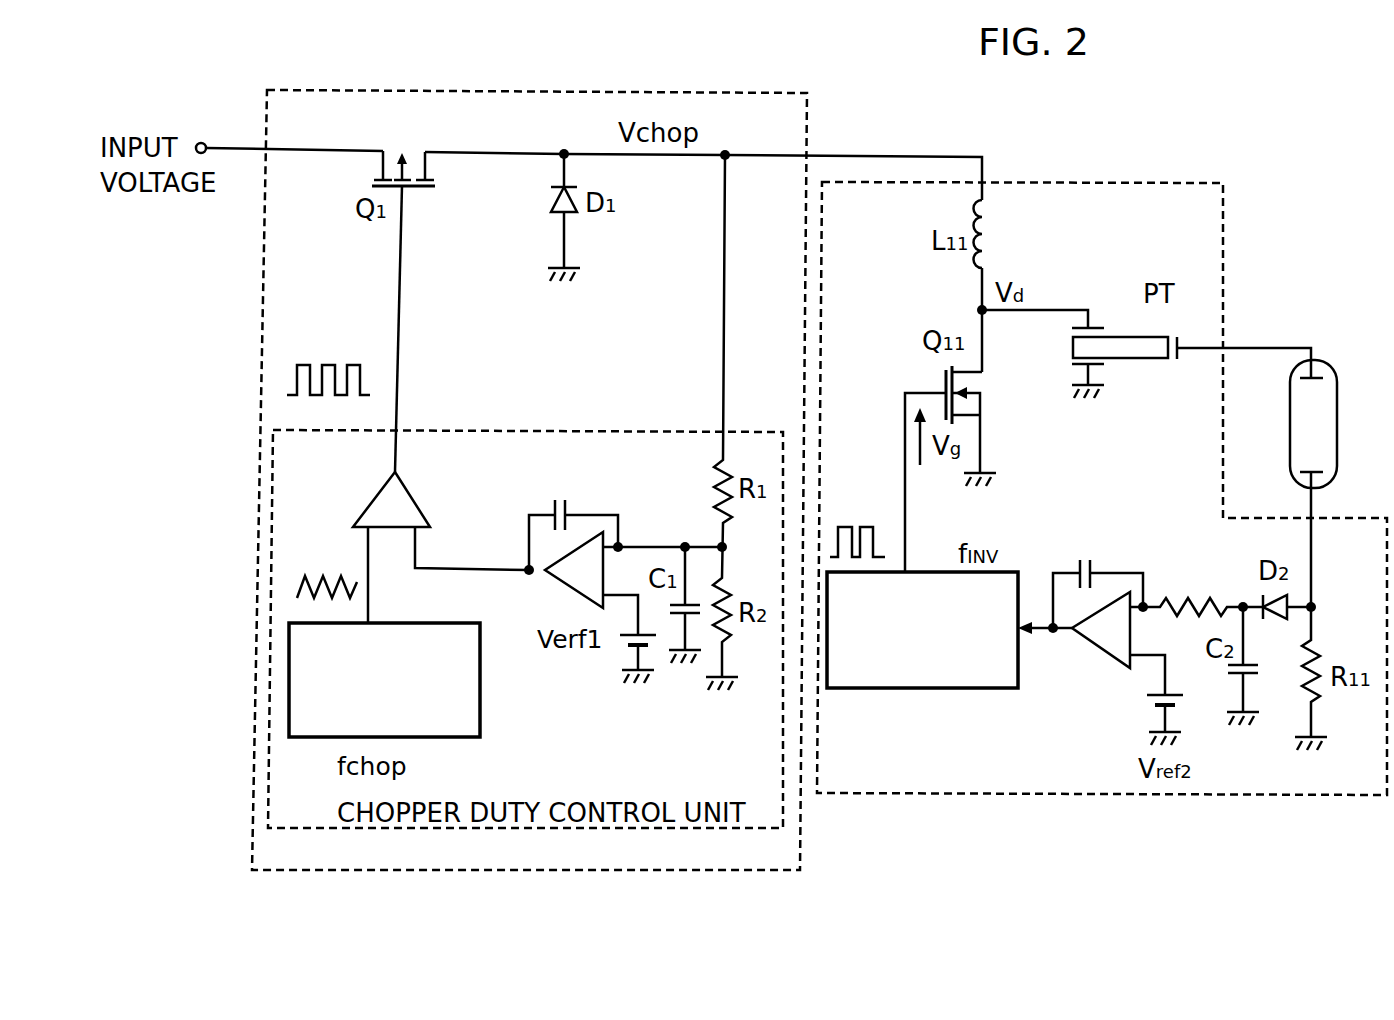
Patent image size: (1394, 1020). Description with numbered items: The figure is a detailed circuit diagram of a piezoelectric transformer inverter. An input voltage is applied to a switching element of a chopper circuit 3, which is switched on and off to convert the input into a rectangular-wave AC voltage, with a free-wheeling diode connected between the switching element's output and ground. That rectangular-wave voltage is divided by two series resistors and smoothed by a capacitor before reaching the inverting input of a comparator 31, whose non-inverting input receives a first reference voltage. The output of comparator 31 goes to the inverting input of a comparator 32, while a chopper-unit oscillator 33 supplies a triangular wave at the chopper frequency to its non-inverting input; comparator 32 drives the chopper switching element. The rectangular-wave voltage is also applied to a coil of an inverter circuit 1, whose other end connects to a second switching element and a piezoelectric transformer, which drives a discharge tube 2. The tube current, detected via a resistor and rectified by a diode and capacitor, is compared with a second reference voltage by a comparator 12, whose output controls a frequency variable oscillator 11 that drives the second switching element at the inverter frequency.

The inverter circuit 1 is at (1177, 183).
The discharge tube 2 is at (1338, 418).
The chopper circuit 3 is at (775, 93).
The frequency variable oscillator 11 is at (978, 690).
The comparator 12 is at (1098, 652).
The comparator 31 is at (568, 588).
The comparator 32 is at (372, 490).
The chopper-unit oscillator 33 is at (480, 672).